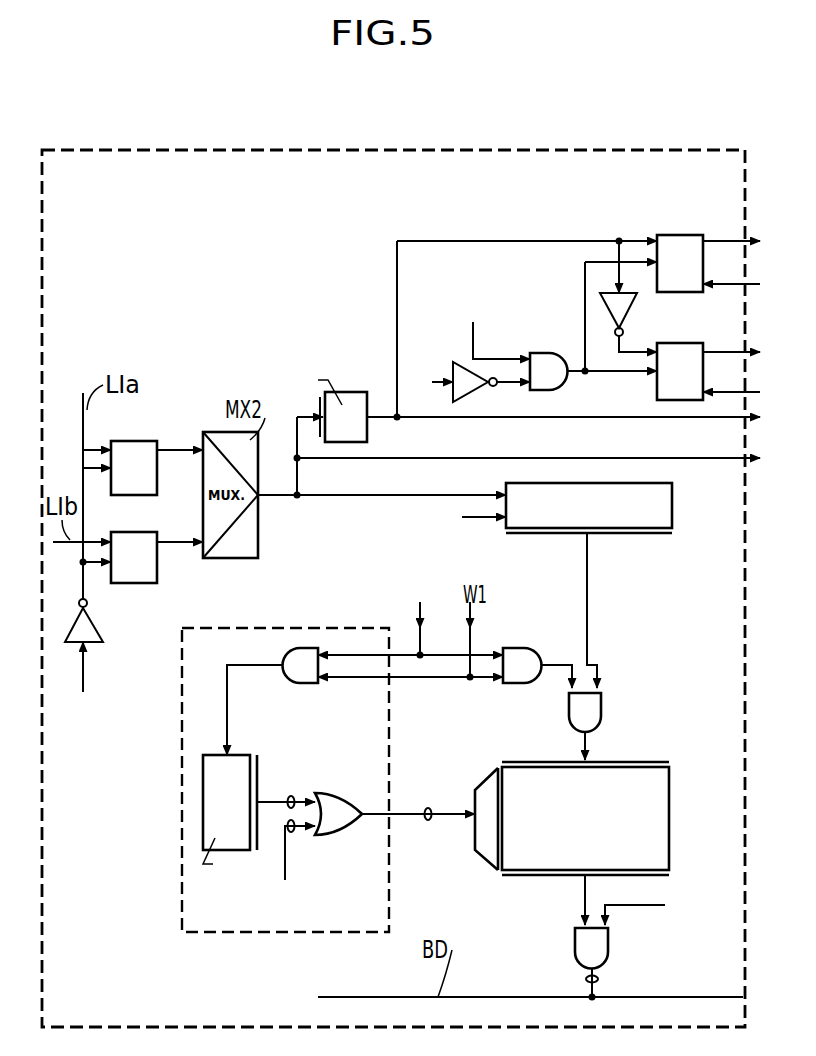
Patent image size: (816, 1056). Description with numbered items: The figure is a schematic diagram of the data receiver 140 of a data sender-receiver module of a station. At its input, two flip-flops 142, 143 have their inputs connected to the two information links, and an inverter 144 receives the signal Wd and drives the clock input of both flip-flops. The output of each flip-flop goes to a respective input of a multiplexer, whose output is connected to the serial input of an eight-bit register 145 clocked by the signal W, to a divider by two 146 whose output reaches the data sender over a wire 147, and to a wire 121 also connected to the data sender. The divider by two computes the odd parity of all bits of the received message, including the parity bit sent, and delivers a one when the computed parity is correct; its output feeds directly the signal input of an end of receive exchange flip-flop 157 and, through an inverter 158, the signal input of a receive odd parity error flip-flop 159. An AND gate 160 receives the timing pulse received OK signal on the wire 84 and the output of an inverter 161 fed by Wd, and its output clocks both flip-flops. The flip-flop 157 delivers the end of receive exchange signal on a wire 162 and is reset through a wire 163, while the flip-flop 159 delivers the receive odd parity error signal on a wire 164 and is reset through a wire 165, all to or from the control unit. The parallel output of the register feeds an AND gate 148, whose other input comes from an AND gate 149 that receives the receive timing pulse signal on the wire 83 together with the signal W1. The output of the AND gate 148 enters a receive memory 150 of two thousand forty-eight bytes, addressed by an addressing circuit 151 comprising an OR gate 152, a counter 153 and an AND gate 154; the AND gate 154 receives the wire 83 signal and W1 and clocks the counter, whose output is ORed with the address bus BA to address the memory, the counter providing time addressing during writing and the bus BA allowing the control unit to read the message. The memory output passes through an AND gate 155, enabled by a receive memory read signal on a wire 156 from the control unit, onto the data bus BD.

The data receiver 140 is at (139, 200).
The flip-flop 142 is at (140, 440).
The flip-flop 143 is at (155, 565).
The inverter 144 is at (90, 632).
The 8-bit register 145 is at (672, 508).
The divider by two 146 is at (357, 400).
The wire 147 is at (425, 420).
The wire 121 is at (545, 461).
The AND gate 148 is at (577, 720).
The AND gate 149 is at (521, 612).
The receive memory 150 is at (660, 790).
The addressing circuit 151 is at (275, 638).
The OR gate 152 is at (330, 800).
The counter 153 is at (236, 758).
The AND gate 154 is at (298, 666).
The AND gate 155 is at (580, 951).
The wire 156 is at (657, 908).
The end of receive exchange flip-flop 157 is at (668, 235).
The inverter 158 is at (622, 310).
The receive odd parity error flip-flop 159 is at (658, 386).
The AND gate 160 is at (548, 358).
The inverter 161 is at (475, 386).
The wire 162 is at (708, 235).
The wire 163 is at (739, 292).
The wire 164 is at (711, 352).
The wire 165 is at (717, 420).
The wire 83 is at (415, 610).
The wire 84 is at (473, 336).